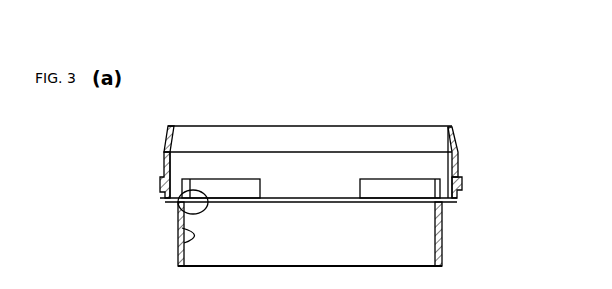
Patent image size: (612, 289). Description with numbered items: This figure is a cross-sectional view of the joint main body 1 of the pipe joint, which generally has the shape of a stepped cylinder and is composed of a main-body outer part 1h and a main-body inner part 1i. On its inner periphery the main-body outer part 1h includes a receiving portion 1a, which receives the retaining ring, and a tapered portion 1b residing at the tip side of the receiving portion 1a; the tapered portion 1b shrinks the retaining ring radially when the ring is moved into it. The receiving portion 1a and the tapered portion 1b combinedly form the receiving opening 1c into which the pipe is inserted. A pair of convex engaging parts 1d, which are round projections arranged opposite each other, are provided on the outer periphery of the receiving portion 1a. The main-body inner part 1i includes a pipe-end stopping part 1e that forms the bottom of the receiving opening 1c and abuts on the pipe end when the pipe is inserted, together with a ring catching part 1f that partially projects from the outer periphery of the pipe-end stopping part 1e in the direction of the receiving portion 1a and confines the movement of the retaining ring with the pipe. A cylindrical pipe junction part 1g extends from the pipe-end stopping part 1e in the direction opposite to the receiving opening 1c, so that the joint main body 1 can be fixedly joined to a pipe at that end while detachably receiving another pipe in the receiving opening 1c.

The joint main body 1 is at (478, 124).
The receiving portion 1a is at (175, 170).
The tapered portion 1b is at (178, 144).
The receiving opening 1c is at (226, 117).
The convex engaging parts 1d is at (463, 183).
The pipe-end stopping part 1e is at (180, 209).
The ring catching part 1f is at (240, 179).
The pipe junction part 1g is at (181, 240).
The main-body outer part 1h is at (464, 155).
The main-body inner part 1i is at (452, 241).